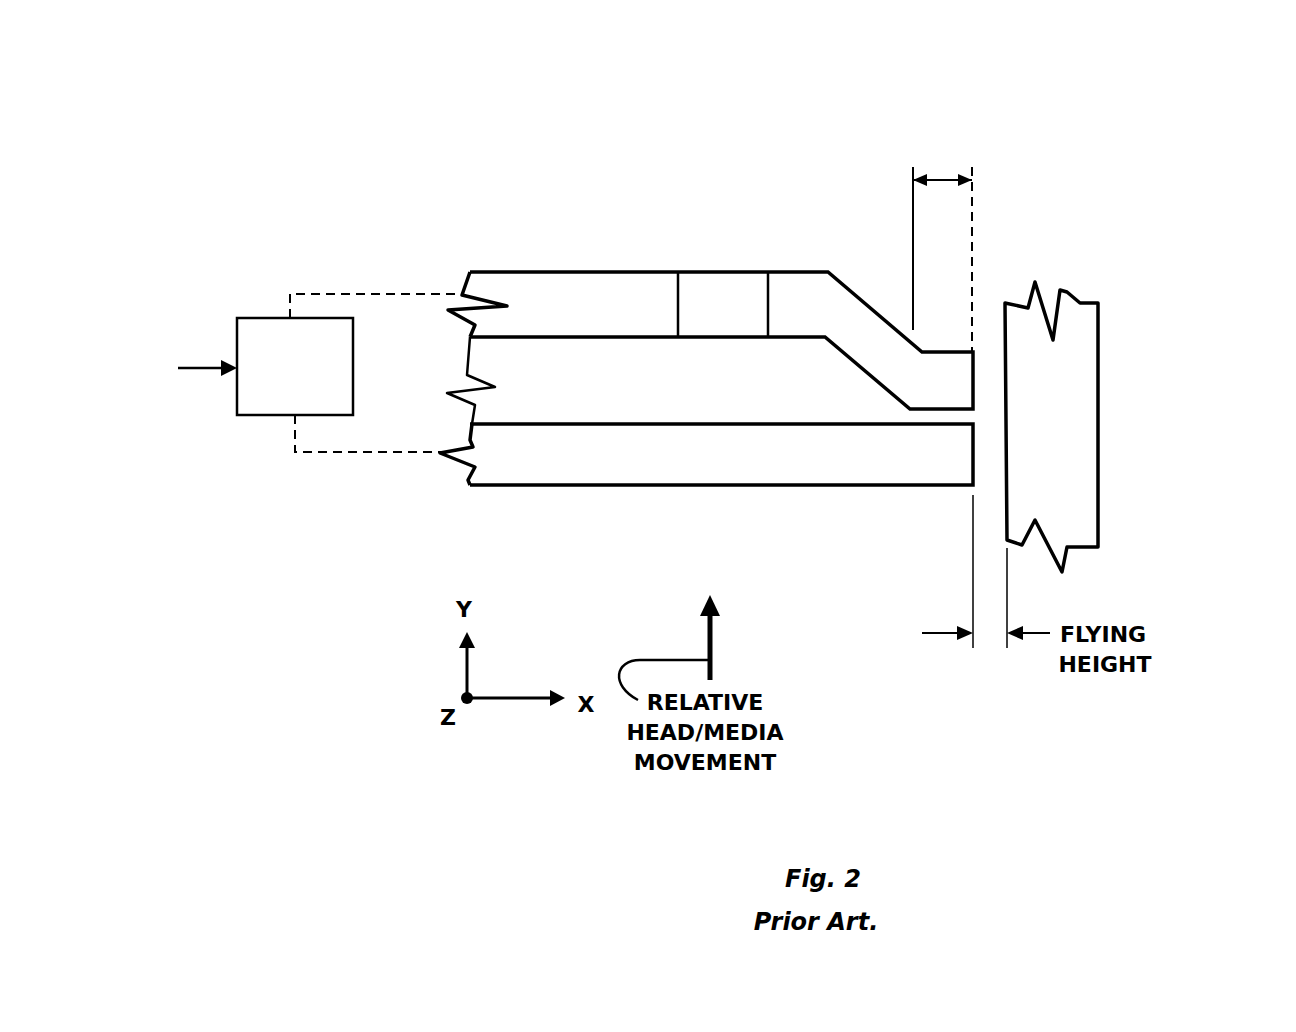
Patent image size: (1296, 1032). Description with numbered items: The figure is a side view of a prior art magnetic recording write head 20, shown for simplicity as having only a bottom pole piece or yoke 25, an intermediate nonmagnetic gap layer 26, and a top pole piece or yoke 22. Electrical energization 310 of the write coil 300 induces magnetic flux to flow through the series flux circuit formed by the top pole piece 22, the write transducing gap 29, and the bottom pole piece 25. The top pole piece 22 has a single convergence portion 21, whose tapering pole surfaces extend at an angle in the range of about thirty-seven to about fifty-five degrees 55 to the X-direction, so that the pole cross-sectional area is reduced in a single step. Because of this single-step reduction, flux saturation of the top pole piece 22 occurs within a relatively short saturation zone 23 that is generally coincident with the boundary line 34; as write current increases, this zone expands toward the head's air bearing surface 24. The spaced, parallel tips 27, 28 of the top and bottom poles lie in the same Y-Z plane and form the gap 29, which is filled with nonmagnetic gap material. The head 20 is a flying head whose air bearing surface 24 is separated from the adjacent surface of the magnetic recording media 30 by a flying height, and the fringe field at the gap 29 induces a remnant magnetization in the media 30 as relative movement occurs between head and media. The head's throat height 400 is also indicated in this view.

The magnetic recording write head 20 is at (380, 624).
The convergence portion 21 is at (712, 290).
The top pole piece 22 is at (947, 382).
The flux saturation zone 23 is at (757, 272).
The air bearing surface 24 is at (972, 310).
The bottom pole piece 25 is at (918, 457).
The gap layer 26 is at (482, 357).
The tip of top pole 27 is at (975, 396).
The tip of bottom pole 28 is at (973, 447).
The write transducing gap 29 is at (940, 418).
The magnetic recording media 30 is at (1080, 433).
The dotted line 34 is at (768, 308).
The angle of fifty-five degrees 55 is at (685, 293).
The write coil 300 is at (248, 415).
The electrical energization 310 is at (208, 363).
The throat height 400 is at (938, 175).